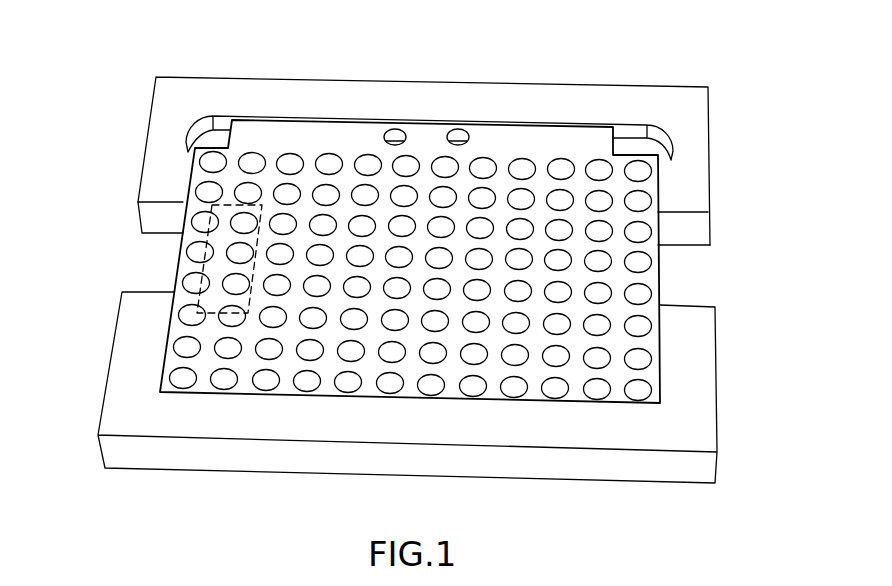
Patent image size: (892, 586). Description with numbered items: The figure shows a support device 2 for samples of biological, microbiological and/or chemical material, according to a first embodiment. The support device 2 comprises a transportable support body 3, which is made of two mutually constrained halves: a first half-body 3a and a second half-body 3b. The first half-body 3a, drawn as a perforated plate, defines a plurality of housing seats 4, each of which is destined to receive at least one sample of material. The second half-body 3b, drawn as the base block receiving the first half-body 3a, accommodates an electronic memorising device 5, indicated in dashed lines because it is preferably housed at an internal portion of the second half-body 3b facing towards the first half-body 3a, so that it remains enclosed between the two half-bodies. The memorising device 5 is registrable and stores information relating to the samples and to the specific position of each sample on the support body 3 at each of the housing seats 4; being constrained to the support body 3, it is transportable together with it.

The support device 2 is at (722, 115).
The transportable support body 3 is at (580, 118).
The first half-body 3a is at (272, 138).
The second half-body 3b is at (163, 130).
The housing seats 4 is at (190, 280).
The electronic memorising device 5 is at (193, 328).